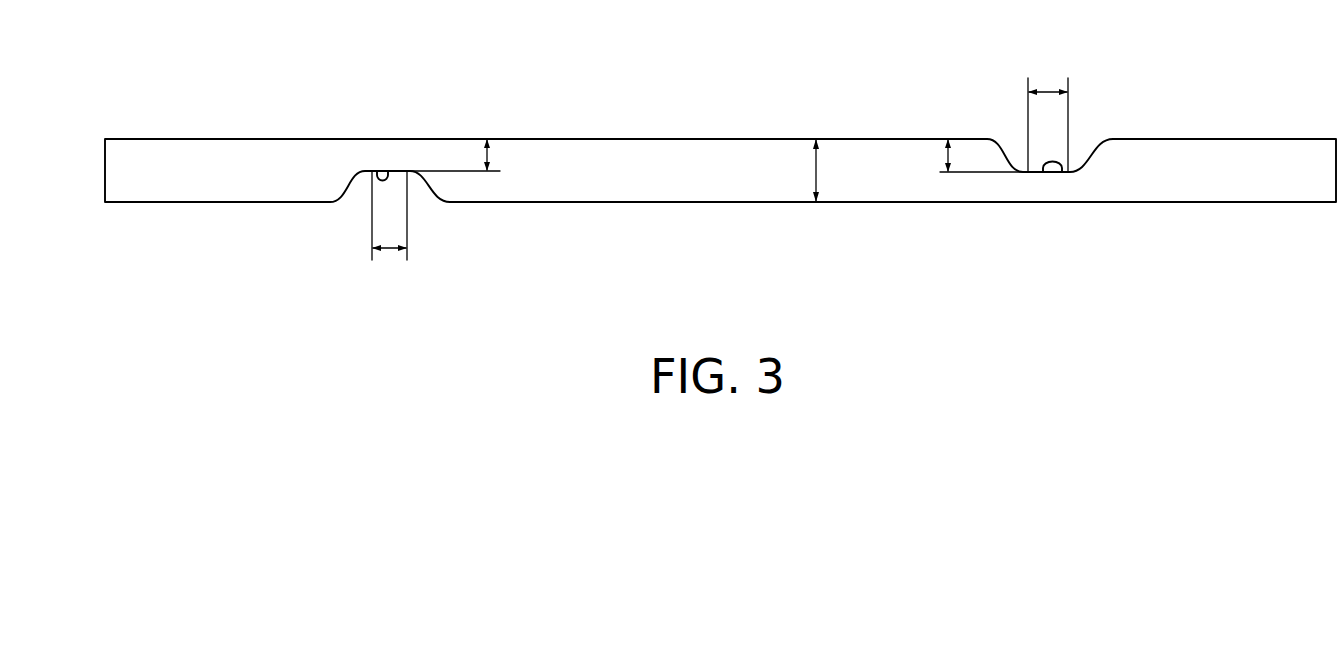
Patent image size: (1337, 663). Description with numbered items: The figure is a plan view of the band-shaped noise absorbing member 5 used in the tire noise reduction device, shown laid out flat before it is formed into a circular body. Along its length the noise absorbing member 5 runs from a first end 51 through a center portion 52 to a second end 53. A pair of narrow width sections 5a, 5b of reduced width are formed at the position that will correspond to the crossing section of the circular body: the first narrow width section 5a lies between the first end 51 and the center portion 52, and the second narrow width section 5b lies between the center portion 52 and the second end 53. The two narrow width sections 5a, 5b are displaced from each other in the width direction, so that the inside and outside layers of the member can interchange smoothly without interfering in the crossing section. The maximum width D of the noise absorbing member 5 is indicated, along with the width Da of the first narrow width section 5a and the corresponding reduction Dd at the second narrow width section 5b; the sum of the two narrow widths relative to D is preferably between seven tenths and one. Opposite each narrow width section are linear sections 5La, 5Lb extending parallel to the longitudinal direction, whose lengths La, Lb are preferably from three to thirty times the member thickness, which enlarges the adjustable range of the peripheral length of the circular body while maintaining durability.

The noise absorbing member 5 is at (783, 139).
The first end 51 is at (213, 148).
The center portion 52 is at (660, 160).
The second end 53 is at (1248, 157).
The first narrow width section 5a is at (400, 148).
The linear section 5La is at (377, 174).
The second narrow width section 5b is at (1040, 196).
The linear section 5Lb is at (1062, 174).
The maximum width of the noise absorbing member D is at (824, 170).
The width of the first narrow width section Da is at (466, 155).
The depth of second recess Dd is at (967, 155).
The length of the linear section 5La La is at (389, 225).
The length of the linear section 5Lb Lb is at (1048, 117).